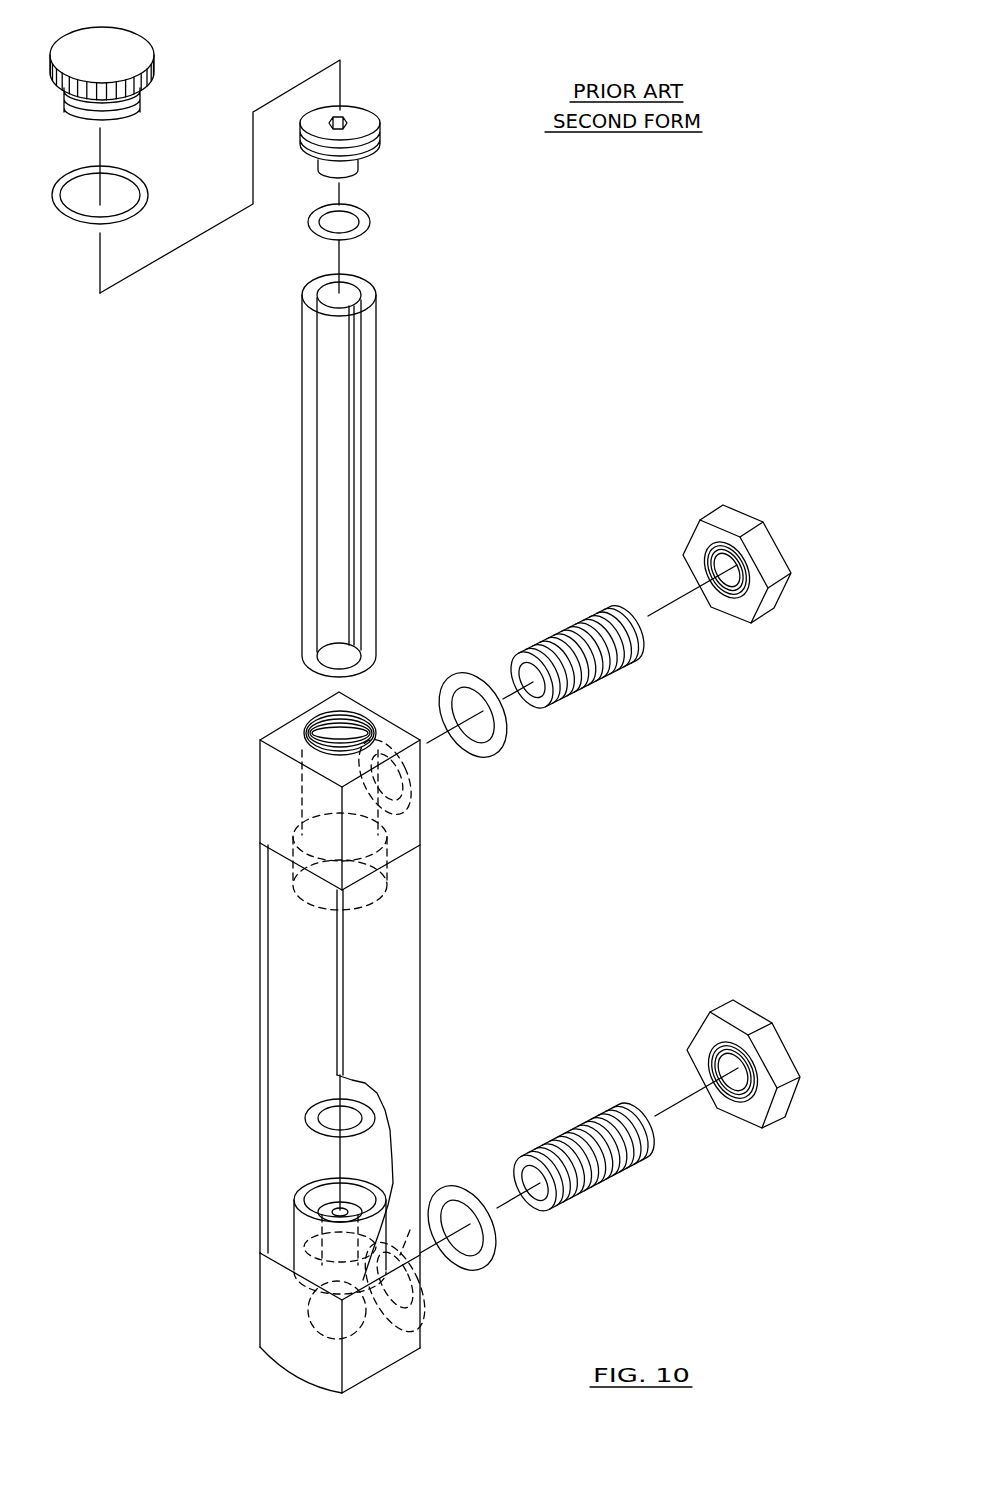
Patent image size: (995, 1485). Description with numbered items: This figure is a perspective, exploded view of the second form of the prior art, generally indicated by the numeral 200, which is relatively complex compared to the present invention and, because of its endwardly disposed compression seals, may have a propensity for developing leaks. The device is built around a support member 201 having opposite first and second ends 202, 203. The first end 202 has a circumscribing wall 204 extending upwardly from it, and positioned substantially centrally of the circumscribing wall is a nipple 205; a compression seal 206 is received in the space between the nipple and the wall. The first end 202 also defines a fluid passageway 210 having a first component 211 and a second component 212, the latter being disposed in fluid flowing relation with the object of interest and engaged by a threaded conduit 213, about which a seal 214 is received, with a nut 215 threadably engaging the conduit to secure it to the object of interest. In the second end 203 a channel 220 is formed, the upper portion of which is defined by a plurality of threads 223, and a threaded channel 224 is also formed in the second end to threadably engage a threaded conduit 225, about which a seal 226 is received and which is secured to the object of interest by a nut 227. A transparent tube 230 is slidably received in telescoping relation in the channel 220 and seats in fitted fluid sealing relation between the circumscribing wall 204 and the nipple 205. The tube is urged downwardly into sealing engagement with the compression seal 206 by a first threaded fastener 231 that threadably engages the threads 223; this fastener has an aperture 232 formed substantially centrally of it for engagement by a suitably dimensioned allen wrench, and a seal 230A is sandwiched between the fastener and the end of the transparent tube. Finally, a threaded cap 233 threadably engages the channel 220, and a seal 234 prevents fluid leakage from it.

The second form of the prior art 200 is at (243, 933).
The support member 201 is at (393, 1017).
The first end 202 is at (407, 1333).
The second end 203 is at (403, 828).
The circumscribing wall 204 is at (295, 1222).
The nipple 205 is at (325, 1205).
The compression seal 206 is at (310, 1127).
The fluid passageway 210 is at (290, 1258).
The first component 211 is at (368, 907).
The second component 212 is at (397, 1370).
The threaded conduit 213 is at (603, 1117).
The seal 214 is at (483, 1250).
The nut 215 is at (742, 1012).
The channel 220 is at (322, 815).
The threads 223 is at (362, 722).
The threaded channel 224 is at (403, 798).
The threaded conduit 225 is at (595, 670).
The seal 226 is at (480, 675).
The nut 227 is at (743, 520).
The transparent tube 230 is at (378, 473).
The seal 230A is at (368, 218).
The first threaded fastener 231 is at (380, 133).
The aperture 232 is at (340, 118).
The threaded cap 233 is at (123, 48).
The seal 234 is at (132, 172).